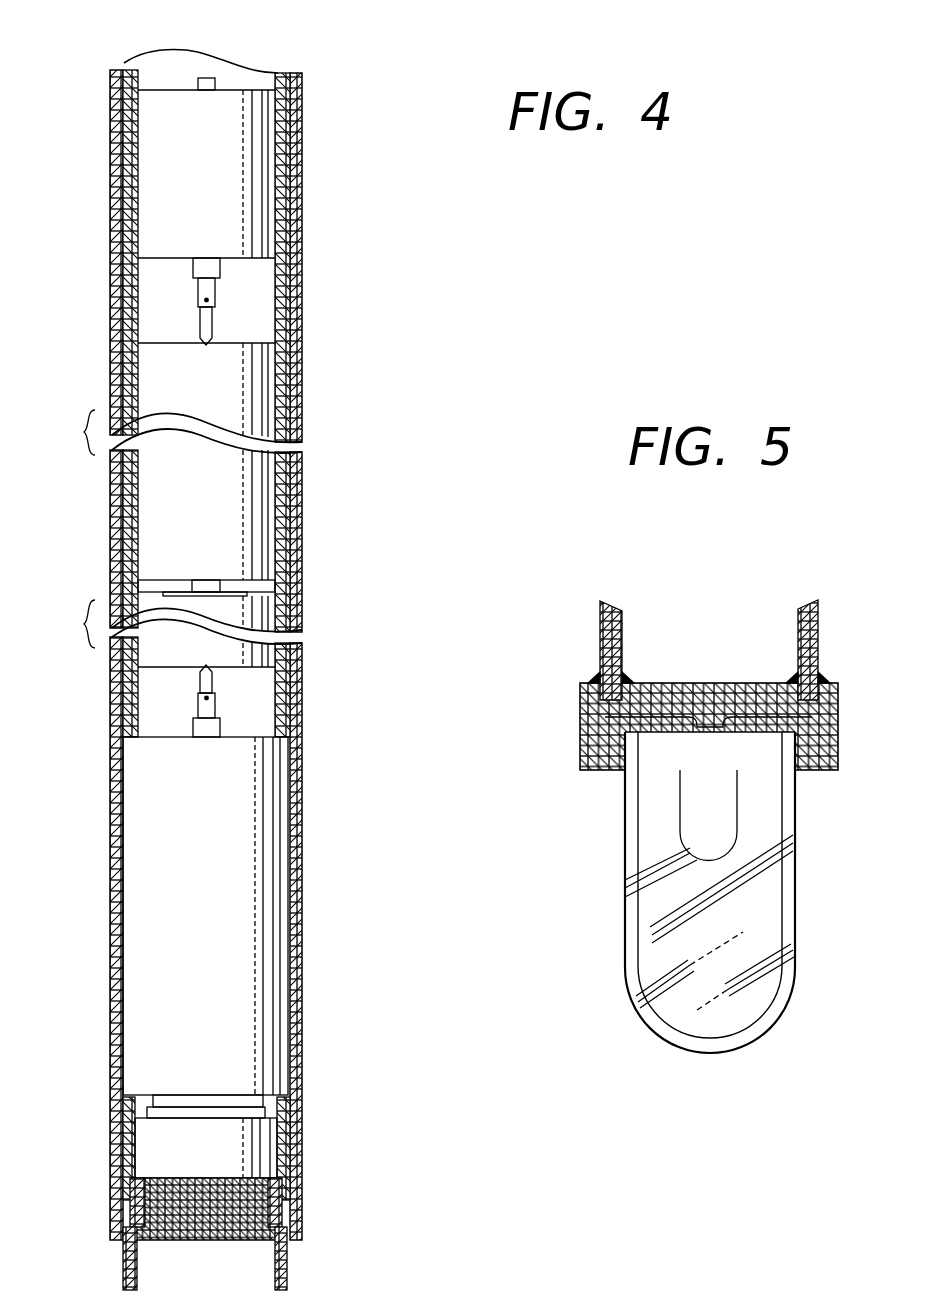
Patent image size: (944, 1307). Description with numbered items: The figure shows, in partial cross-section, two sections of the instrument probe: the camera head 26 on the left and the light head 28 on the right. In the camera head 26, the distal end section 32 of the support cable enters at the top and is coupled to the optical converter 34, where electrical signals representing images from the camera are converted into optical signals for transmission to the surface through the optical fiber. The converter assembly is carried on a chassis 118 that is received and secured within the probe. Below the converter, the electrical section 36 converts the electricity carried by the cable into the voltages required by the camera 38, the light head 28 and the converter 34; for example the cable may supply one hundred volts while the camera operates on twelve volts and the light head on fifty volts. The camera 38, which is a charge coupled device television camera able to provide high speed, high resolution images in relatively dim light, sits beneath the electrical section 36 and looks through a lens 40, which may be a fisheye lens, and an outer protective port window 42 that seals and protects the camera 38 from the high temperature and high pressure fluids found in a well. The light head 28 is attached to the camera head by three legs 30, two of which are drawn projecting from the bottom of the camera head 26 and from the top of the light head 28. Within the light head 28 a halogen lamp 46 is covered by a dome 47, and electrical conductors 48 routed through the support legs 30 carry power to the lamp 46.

In FIG. 4, the camera head 26 is at (70, 199).
In FIG. 4, the chassis 118 is at (133, 63).
In FIG. 4, the distal end section 32 is at (208, 78).
In FIG. 4, the optical converter 34 is at (232, 196).
In FIG. 4, the electrical section 36 is at (232, 380).
In FIG. 4, the camera 38 is at (232, 848).
In FIG. 4, the lens 40 is at (230, 1152).
In FIG. 4, the port window 42 is at (180, 1242).
In FIG. 4, the electrical conductors 48 is at (128, 1212).
In FIG. 5, the electrical conductors 48 is at (670, 715).
In FIG. 4, the legs 30 is at (118, 1258).
In FIG. 5, the legs 30 is at (605, 603).
In FIG. 5, the light head 28 is at (771, 1081).
In FIG. 5, the halogen lamp 46 is at (725, 826).
In FIG. 5, the dome 47 is at (797, 927).